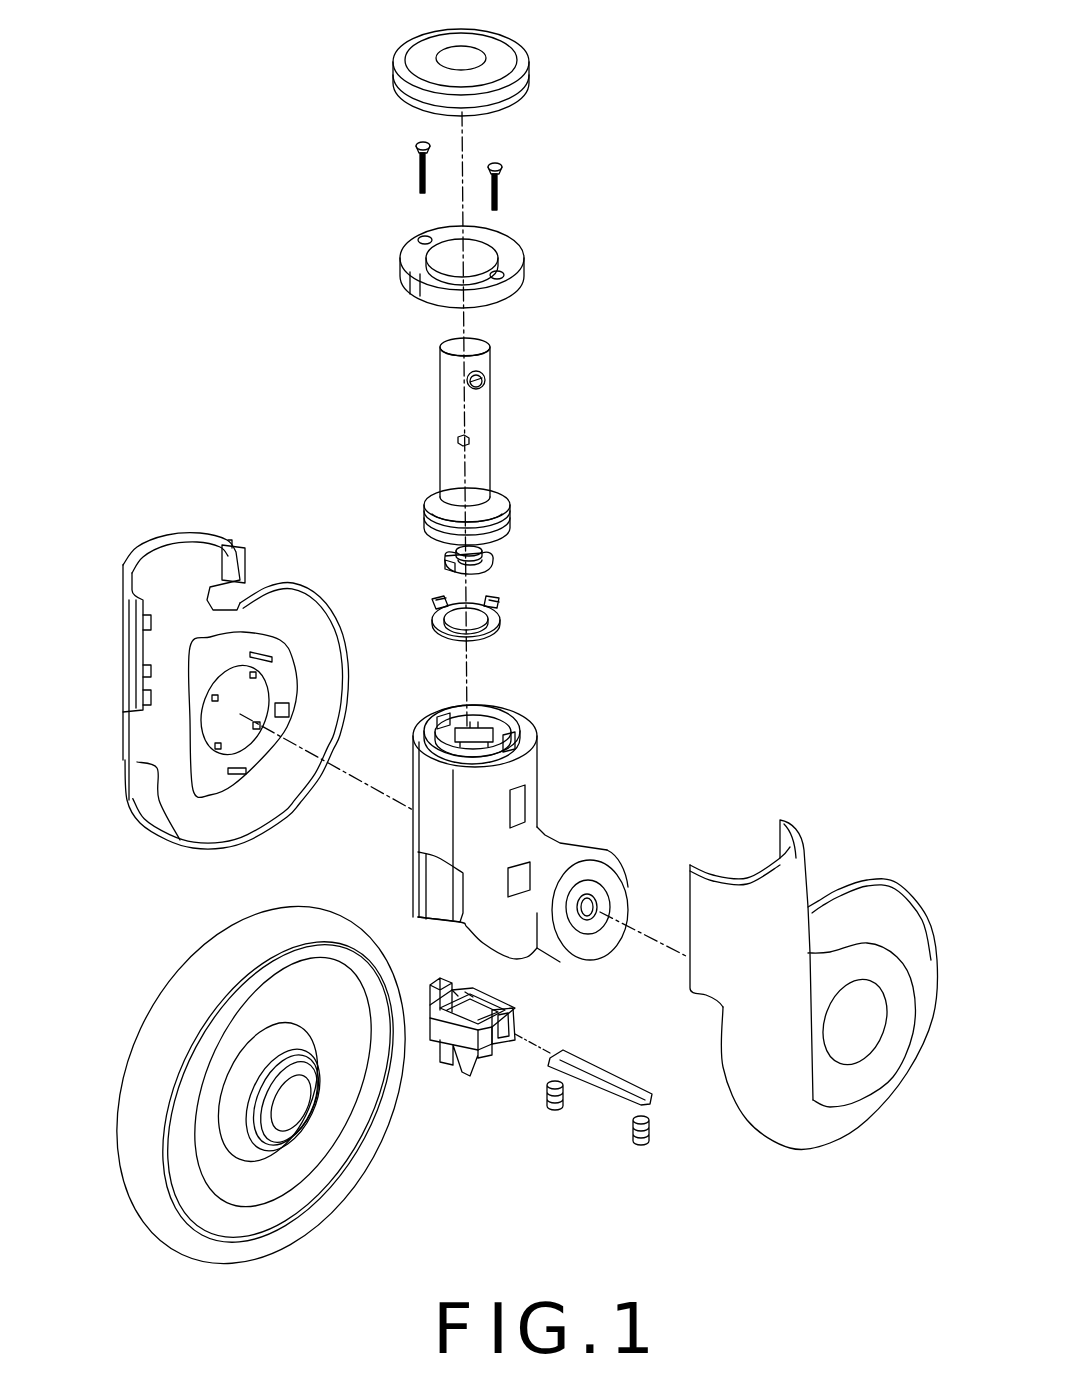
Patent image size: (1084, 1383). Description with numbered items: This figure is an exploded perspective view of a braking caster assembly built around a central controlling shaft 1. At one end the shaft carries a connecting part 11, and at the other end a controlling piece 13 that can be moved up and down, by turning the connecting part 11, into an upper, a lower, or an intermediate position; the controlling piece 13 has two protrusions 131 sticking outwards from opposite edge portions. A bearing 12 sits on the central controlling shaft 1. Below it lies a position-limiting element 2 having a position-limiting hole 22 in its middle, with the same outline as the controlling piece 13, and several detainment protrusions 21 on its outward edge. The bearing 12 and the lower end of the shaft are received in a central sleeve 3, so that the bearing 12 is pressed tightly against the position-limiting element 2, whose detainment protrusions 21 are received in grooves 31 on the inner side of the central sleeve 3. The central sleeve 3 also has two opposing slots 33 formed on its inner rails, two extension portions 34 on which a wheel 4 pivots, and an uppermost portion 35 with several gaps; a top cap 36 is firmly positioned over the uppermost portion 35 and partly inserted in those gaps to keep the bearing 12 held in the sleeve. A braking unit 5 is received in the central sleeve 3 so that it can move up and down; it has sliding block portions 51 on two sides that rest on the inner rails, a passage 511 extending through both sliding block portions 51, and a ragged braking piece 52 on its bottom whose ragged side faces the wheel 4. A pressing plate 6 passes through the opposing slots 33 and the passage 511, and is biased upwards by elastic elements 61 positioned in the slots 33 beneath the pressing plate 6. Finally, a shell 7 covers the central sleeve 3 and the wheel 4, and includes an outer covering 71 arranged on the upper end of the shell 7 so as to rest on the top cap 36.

The central controlling shaft 1 is at (517, 416).
The connecting part 11 is at (490, 374).
The bearing 12 is at (511, 518).
The controlling piece 13 is at (455, 523).
The protrusions 131 is at (447, 565).
The position-limiting element 2 is at (470, 628).
The detainment protrusions 21 is at (433, 603).
The position-limiting hole 22 is at (465, 628).
The central sleeve 3 is at (515, 808).
The grooves 31 is at (505, 733).
The slots 33 is at (518, 812).
The extension portions 34 is at (580, 890).
The uppermost portion 35 is at (430, 740).
The top cap 36 is at (508, 255).
The wheel 4 is at (313, 1180).
The braking unit 5 is at (483, 1024).
The sliding block portions 51 is at (445, 975).
The passage 511 is at (512, 1040).
The ragged braking piece 52 is at (468, 1062).
The pressing plate 6 is at (636, 1085).
The elastic elements 61 is at (655, 1130).
The shell 7 is at (128, 640).
The outer covering 71 is at (498, 57).